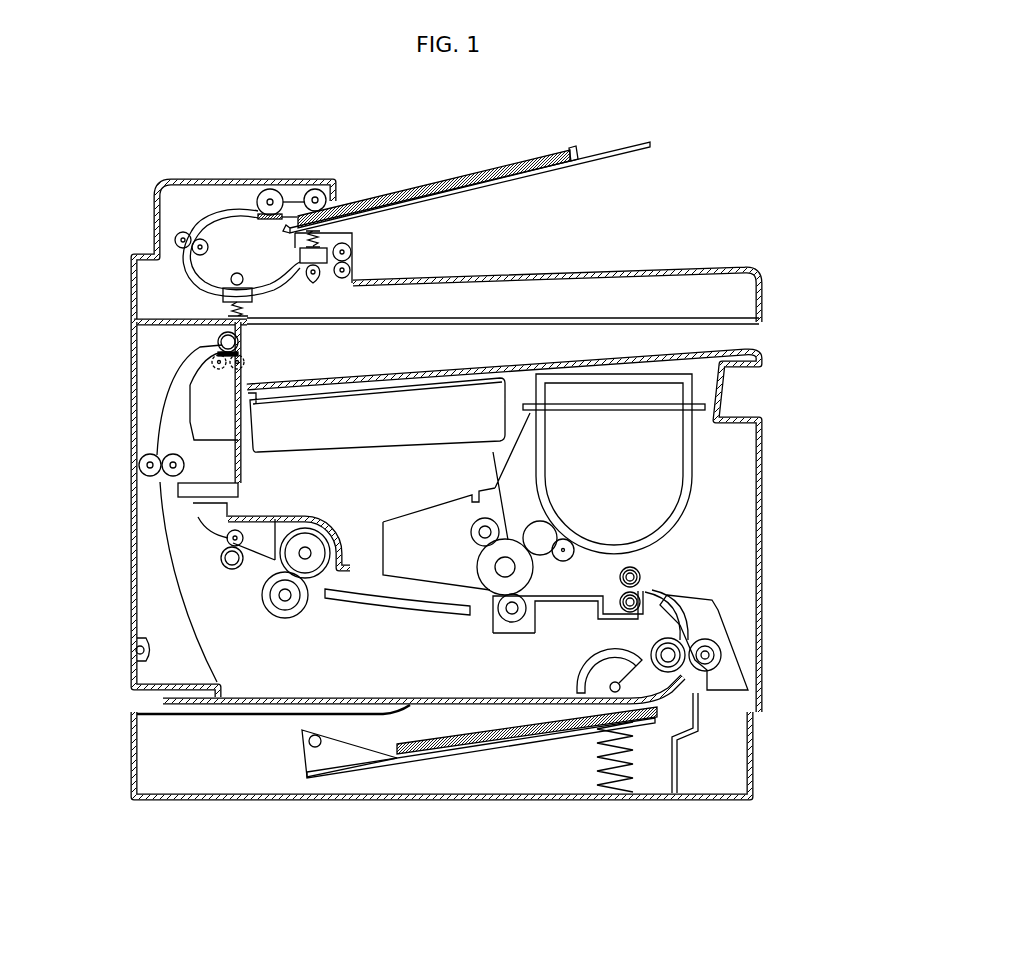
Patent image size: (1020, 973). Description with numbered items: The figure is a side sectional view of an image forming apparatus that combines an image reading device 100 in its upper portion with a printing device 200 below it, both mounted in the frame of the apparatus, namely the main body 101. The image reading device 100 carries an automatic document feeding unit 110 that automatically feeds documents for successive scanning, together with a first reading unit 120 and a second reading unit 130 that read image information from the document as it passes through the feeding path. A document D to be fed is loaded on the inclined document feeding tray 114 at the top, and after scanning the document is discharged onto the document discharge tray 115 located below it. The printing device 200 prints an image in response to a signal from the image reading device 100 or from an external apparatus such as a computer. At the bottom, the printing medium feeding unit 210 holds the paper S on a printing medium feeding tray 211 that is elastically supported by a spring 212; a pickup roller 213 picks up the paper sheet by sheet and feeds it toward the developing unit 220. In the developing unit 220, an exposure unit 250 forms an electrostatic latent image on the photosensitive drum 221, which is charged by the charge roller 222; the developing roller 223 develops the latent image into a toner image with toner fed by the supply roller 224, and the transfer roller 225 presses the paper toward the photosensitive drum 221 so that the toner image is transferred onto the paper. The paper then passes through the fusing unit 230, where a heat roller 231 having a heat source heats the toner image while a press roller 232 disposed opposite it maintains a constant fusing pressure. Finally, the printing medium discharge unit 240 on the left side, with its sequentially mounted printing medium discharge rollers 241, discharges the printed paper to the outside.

The image reading device 100 is at (770, 212).
The main body 101 is at (152, 225).
The automatic document feeding unit 110 is at (254, 200).
The document feeding tray 114 is at (615, 150).
The document discharge tray 115 is at (493, 277).
The first reading unit 120 is at (210, 305).
The second reading unit 130 is at (333, 240).
The document D is at (454, 181).
The printing device 200 is at (773, 396).
The printing medium feeding unit 210 is at (543, 750).
The printing medium feeding tray 211 is at (437, 763).
The spring 212 is at (630, 762).
The pickup roller 213 is at (585, 673).
The developing unit 220 is at (703, 507).
The photosensitive drum 221 is at (478, 565).
The charge roller 222 is at (472, 520).
The developing roller 223 is at (532, 523).
The supply roller 224 is at (570, 552).
The transfer roller 225 is at (497, 610).
The fusing unit 230 is at (320, 603).
The heat roller 231 is at (317, 527).
The press roller 232 is at (287, 619).
The printing medium discharge unit 240 is at (155, 486).
The printing medium discharge rollers 241 is at (240, 340).
The exposure unit 250 is at (373, 438).
The paper S is at (455, 735).